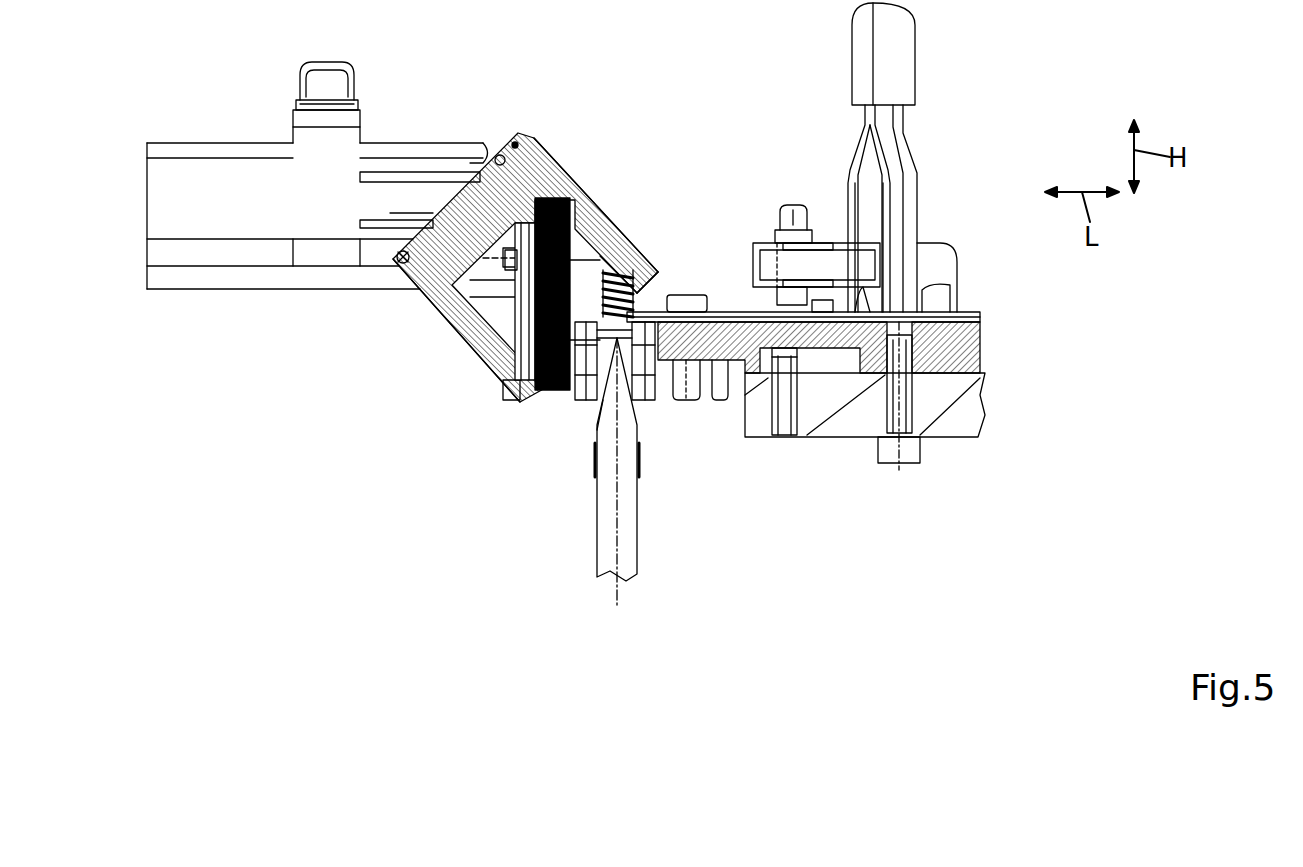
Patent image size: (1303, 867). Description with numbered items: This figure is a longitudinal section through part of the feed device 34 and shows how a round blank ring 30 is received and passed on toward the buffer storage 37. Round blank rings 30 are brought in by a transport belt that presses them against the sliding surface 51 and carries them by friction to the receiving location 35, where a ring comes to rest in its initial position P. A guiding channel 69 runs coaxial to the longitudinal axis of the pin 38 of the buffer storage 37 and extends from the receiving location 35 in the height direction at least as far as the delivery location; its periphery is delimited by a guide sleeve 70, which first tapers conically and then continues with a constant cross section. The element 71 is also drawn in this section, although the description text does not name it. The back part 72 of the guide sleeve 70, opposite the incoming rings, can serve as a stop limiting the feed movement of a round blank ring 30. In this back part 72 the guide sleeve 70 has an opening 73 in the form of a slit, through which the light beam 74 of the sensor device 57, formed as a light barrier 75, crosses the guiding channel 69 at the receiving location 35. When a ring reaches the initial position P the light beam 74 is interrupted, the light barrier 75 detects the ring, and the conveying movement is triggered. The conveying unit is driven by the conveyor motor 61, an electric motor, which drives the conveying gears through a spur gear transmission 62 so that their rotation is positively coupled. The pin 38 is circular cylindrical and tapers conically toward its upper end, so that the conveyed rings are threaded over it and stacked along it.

The conveyor motor 61 is at (419, 128).
The feed device 34 is at (582, 122).
The sensor device 57 is at (571, 189).
The light barrier 75 is at (629, 274).
The pivot 71 is at (590, 308).
The receiving location 35 is at (650, 298).
The round blank ring 30 is at (715, 312).
The sliding surface 51 is at (983, 322).
The back part 72 is at (497, 357).
The light beam 74 is at (510, 388).
The transmission 62 is at (549, 398).
The opening 73 is at (570, 392).
The buffer storage 37 is at (595, 523).
The pin 38 is at (630, 515).
The guiding channel 69 is at (624, 350).
The guide sleeve 70 is at (631, 386).
The initial position P is at (640, 390).